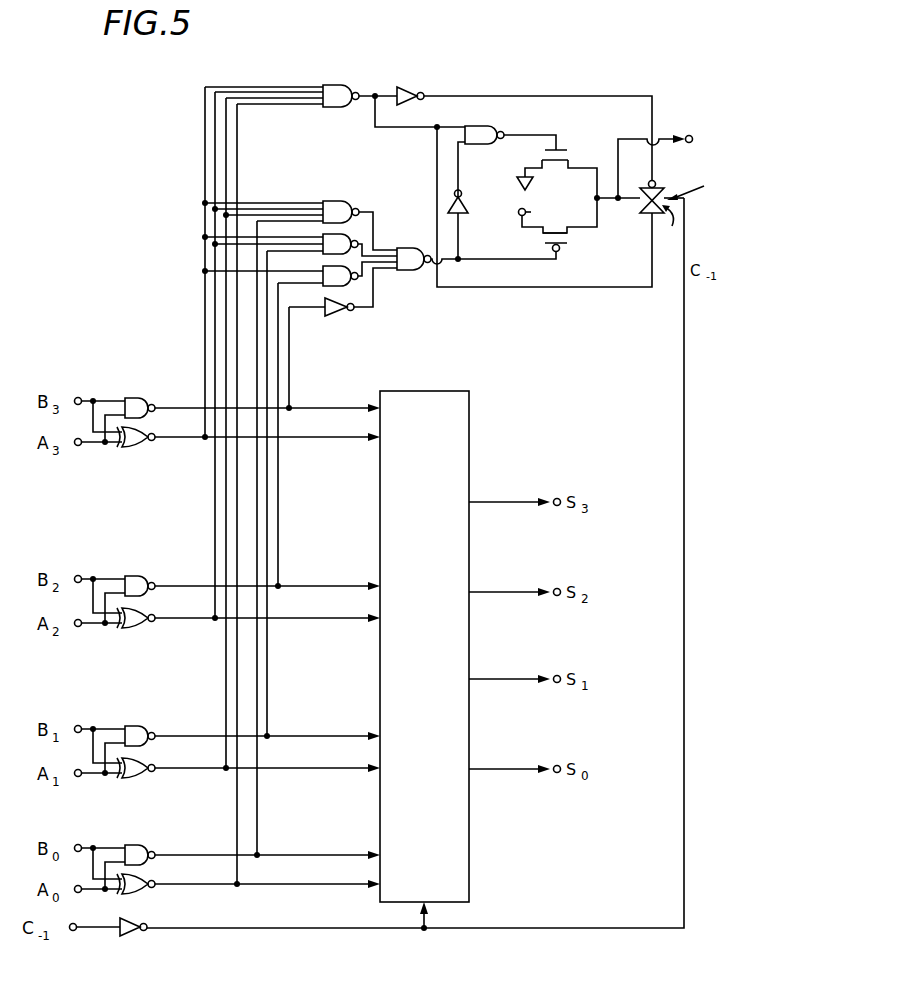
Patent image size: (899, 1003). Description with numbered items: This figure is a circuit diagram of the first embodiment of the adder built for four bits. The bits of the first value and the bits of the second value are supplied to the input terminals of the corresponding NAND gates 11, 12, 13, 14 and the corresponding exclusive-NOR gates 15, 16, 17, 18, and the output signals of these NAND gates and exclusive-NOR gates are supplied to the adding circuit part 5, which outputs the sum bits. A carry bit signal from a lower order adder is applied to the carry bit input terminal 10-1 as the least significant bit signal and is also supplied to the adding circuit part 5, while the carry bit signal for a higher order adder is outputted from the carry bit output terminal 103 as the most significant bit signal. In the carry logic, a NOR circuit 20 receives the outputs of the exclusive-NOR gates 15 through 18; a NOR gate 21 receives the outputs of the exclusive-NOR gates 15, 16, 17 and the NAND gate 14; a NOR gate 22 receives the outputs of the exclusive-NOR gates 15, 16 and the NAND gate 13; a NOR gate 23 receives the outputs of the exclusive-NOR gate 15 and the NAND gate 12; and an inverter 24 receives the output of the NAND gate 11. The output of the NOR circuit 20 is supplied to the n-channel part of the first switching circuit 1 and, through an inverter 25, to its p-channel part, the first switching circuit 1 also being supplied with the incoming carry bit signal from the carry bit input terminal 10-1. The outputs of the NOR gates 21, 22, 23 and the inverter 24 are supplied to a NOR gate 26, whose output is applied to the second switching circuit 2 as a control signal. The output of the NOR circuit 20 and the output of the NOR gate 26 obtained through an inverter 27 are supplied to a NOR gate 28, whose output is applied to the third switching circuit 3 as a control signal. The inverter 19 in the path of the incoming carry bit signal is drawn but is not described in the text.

The first switching circuit 1 is at (668, 190).
The second switching circuit 2 is at (570, 238).
The third switching circuit 3 is at (560, 148).
The adding circuit part 5 is at (469, 876).
The carry bit input terminal 10-1 is at (76, 932).
The carry bit output terminal 103 is at (695, 132).
The NAND gate 11 is at (134, 397).
The NAND gate 12 is at (143, 577).
The NAND gate 13 is at (138, 727).
The NAND gate 14 is at (150, 847).
The exclusive-NOR gate 15 is at (132, 448).
The exclusive-NOR gate 16 is at (145, 626).
The exclusive-NOR gate 17 is at (145, 776).
The exclusive-NOR gate 18 is at (148, 892).
The inverter 19 is at (133, 937).
The NOR circuit 20 is at (335, 84).
The NOR gate 21 is at (328, 200).
The NOR gate 22 is at (345, 232).
The NOR gate 23 is at (343, 285).
The inverter 24 is at (330, 318).
The inverter 25 is at (406, 86).
The NOR gate 26 is at (412, 270).
The inverter 27 is at (463, 206).
The NOR gate 28 is at (488, 127).